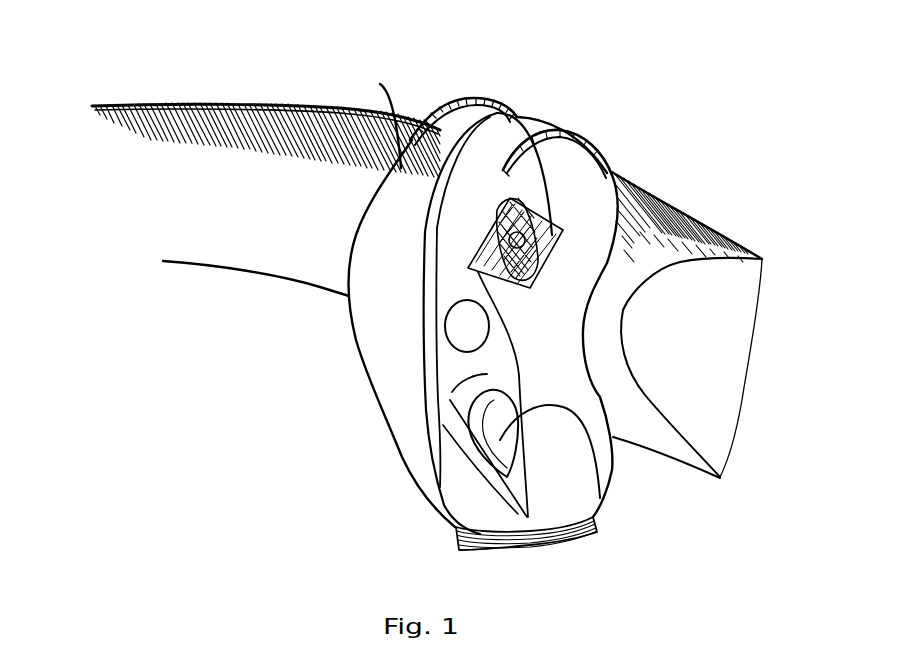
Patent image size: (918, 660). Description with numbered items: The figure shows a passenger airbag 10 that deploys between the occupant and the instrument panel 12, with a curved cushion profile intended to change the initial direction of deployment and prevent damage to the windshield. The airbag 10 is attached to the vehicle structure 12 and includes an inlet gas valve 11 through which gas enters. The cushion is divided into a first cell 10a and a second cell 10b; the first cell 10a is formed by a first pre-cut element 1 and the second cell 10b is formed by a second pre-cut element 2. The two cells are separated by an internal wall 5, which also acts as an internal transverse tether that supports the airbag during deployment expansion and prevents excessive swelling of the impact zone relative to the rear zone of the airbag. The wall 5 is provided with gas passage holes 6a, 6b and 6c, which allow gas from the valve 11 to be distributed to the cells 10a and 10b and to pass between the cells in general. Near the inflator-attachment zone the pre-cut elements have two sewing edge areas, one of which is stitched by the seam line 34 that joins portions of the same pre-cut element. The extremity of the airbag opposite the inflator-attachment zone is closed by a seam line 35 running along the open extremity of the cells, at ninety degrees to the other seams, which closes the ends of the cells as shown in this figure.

The first pre-cut element 1 is at (380, 84).
The seam line 34 is at (477, 97).
The airbag 10 is at (615, 94).
The second pre-cut element 2 is at (586, 201).
The instrument panel 12 is at (698, 212).
The gas passage hole 6a is at (503, 203).
The inlet gas valve 11 is at (537, 270).
The gas passage hole 6b is at (463, 326).
The internal wall 5 is at (440, 487).
The seam line 35 is at (507, 550).
The gas passage hole 6c is at (607, 490).
The first cell 10a is at (370, 437).
The second cell 10b is at (630, 492).